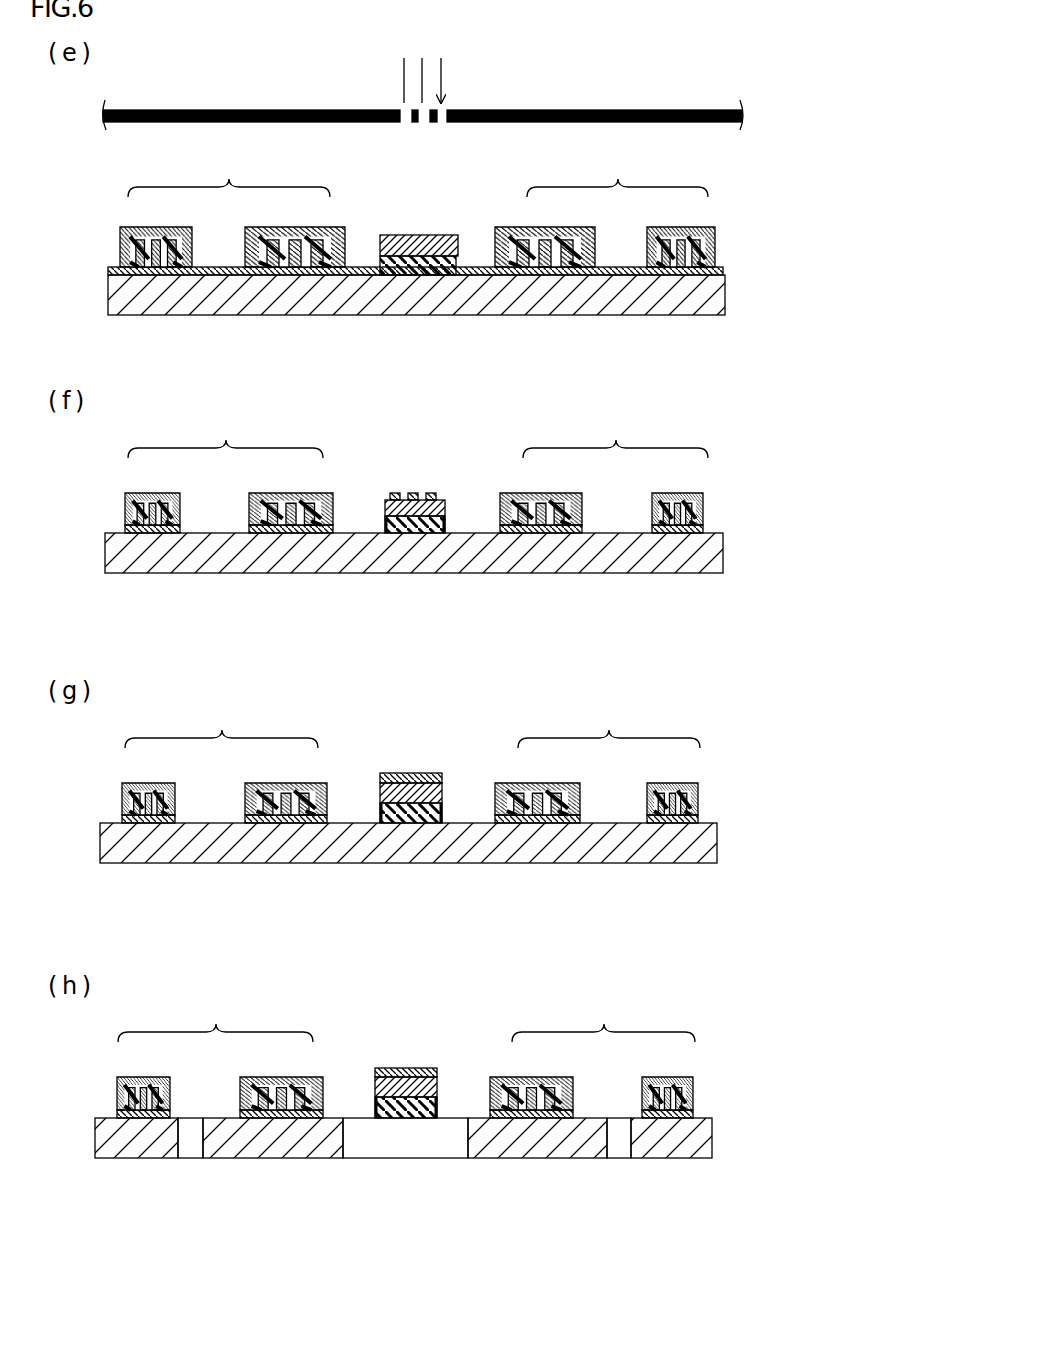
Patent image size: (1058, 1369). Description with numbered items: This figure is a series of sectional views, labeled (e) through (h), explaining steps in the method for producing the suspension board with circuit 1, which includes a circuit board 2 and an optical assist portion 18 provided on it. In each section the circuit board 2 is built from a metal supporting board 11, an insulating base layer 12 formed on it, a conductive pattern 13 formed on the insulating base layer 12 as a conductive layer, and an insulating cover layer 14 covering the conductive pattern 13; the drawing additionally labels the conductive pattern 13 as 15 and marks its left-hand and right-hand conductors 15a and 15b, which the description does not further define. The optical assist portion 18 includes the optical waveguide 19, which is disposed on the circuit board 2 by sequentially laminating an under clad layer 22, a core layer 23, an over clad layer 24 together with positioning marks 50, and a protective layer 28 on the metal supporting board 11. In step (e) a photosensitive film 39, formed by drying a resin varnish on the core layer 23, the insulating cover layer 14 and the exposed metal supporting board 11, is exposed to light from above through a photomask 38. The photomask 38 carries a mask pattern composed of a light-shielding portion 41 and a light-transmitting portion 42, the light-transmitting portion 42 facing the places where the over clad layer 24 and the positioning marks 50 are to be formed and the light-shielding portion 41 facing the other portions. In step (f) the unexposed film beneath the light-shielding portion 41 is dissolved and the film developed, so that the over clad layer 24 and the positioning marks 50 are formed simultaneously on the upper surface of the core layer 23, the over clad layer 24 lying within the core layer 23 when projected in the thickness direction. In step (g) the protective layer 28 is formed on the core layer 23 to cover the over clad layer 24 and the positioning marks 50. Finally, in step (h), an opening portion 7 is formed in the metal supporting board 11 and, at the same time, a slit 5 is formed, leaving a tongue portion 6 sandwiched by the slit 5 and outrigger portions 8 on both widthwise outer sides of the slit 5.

The suspension board with circuit 1 is at (415, 1247).
The circuit board 2 is at (728, 312).
The slit 5 is at (203, 1140).
The tongue portion 6 is at (275, 1158).
The opening portion 7 is at (343, 1140).
The outrigger portion 8 is at (128, 1158).
The metal supporting board 11 is at (446, 756).
The insulating base layer 12 is at (108, 271).
The conductive pattern 13 is at (413, 596).
The insulating cover layer 14 is at (412, 651).
The wiring electrode 15 is at (413, 596).
The first electrode portion 15a is at (157, 220).
The second electrode portion 15b is at (553, 220).
The optical assist portion 18 is at (390, 1135).
The optical waveguide 19 is at (416, 694).
The under clad layer 22 is at (458, 268).
The core layer 23 is at (425, 235).
The over clad layer 24 is at (407, 493).
The protective layer 28 is at (382, 773).
The photomask 38 is at (745, 115).
The photosensitive film 39 is at (715, 246).
The light-shielding portion 41 is at (258, 110).
The light-transmitting portion 42 is at (402, 108).
The positioning marks 50 is at (385, 505).